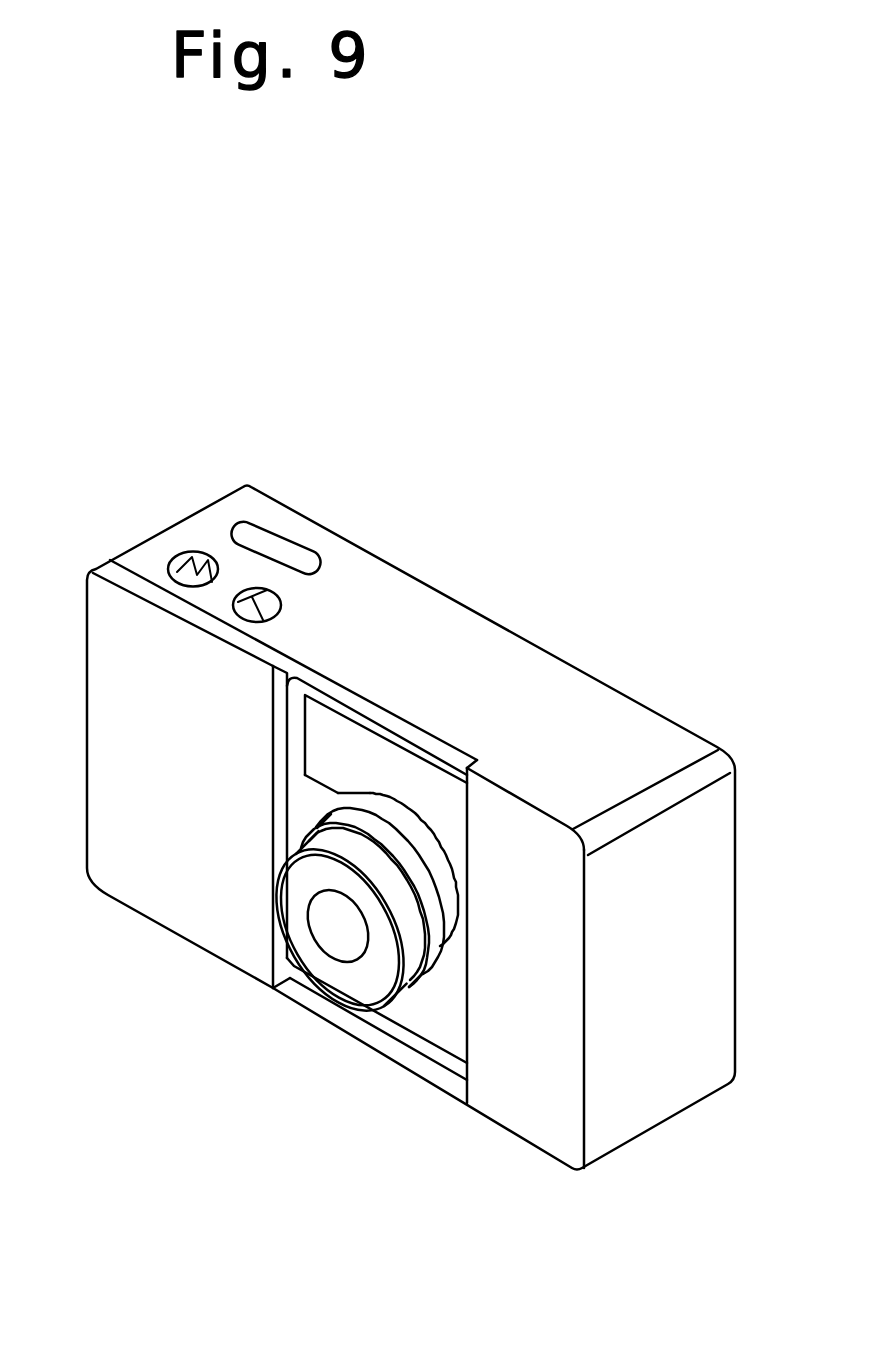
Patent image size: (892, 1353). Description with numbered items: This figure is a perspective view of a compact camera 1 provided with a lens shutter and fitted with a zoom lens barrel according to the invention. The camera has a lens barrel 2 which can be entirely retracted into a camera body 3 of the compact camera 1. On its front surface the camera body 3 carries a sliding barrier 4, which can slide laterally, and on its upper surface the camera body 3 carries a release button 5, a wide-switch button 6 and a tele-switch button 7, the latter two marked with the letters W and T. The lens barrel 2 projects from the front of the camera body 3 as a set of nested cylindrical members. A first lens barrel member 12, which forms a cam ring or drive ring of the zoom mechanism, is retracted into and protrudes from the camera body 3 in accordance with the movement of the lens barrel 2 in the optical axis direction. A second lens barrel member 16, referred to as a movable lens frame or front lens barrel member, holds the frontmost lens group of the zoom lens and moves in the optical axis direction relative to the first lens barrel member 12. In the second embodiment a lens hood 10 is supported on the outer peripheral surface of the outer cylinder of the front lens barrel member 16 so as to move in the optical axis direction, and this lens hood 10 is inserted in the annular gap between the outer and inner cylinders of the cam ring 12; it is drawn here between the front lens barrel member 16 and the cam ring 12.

The compact camera 1 is at (655, 655).
The lens barrel 2 is at (266, 925).
The camera body 3 is at (398, 615).
The sliding barrier 4 is at (175, 853).
The release button 5 is at (286, 533).
The wide-switch button 6 is at (193, 551).
The tele-switch button 7 is at (245, 588).
The lens hood 10 is at (403, 943).
The first lens barrel member 12 is at (441, 947).
The second lens barrel member 16 is at (327, 967).